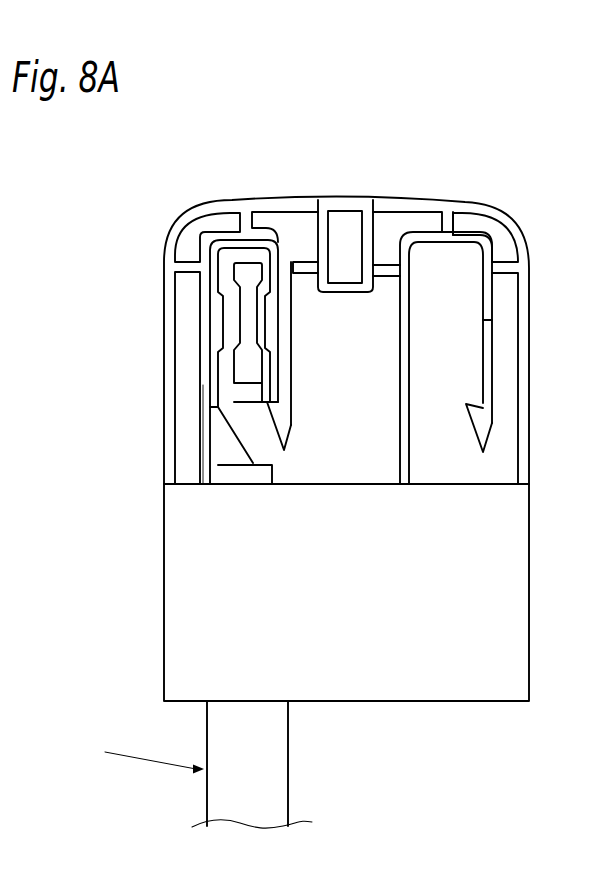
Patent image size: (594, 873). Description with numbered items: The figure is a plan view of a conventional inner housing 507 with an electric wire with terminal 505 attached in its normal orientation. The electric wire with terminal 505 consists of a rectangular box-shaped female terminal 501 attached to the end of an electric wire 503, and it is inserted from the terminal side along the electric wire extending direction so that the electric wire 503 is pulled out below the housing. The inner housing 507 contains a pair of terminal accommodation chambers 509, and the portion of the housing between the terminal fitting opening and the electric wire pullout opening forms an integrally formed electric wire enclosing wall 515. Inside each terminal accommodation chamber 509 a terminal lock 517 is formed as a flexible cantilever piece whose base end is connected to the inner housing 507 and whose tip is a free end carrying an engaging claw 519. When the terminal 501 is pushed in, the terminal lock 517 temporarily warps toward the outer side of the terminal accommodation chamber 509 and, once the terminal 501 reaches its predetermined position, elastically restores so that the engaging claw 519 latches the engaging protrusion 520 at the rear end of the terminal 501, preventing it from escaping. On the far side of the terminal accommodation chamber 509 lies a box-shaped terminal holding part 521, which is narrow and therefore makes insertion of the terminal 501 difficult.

The terminal 501 is at (224, 383).
The electric wire 503 is at (274, 761).
The electric wire with terminal 505 is at (134, 755).
The inner housing 507 is at (182, 205).
The terminal accommodation chamber 509 is at (213, 300).
The electric wire enclosing wall 515 is at (232, 565).
The terminal lock 517 is at (294, 363).
The engaging claw 519 is at (274, 428).
The engaging protrusion 520 is at (282, 398).
The terminal holding part 521 is at (283, 236).